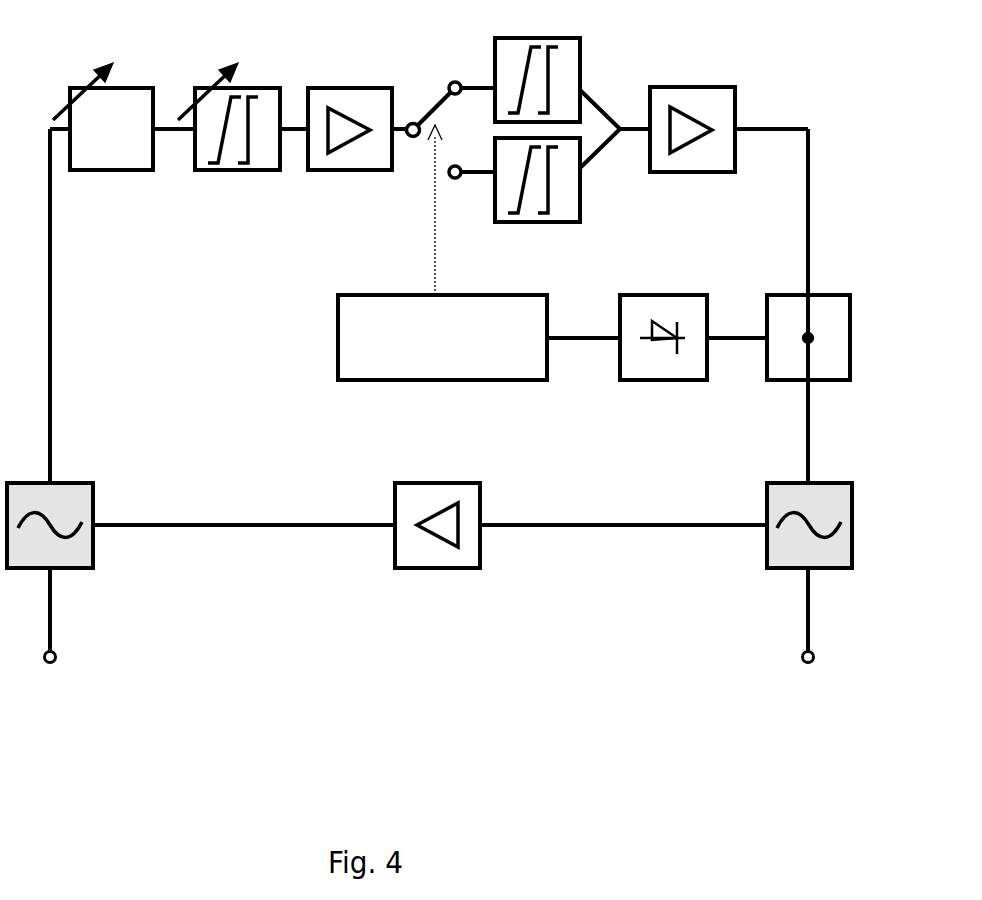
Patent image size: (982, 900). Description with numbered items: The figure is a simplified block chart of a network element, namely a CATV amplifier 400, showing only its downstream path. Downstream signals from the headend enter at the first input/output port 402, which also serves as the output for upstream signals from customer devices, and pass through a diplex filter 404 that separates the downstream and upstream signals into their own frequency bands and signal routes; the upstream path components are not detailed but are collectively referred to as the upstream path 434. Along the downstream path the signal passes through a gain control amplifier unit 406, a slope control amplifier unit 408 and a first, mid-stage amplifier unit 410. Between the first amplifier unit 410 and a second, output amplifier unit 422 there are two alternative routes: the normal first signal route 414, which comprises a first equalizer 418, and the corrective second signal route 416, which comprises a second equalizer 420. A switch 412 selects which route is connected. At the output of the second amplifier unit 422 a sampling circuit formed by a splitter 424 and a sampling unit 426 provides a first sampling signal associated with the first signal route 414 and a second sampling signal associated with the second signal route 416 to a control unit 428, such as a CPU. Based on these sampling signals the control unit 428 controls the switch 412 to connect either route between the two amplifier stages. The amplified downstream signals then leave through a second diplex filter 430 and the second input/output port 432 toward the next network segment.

The CATV amplifier 400 is at (851, 55).
The first input/output port 402 is at (68, 637).
The diplex filter 404 is at (83, 525).
The gain control amplifier unit 406 is at (103, 171).
The slope control amplifier unit 408 is at (229, 171).
The first amplifier unit 410 is at (350, 182).
The switch 412 is at (427, 120).
The first signal route 414 is at (470, 82).
The second signal route 416 is at (463, 178).
The first equalizer 418 is at (568, 100).
The second equalizer 420 is at (568, 205).
The second amplifier unit 422 is at (723, 115).
The splitter 424 is at (827, 368).
The sampling unit 426 is at (678, 378).
The control unit 428 is at (442, 353).
The diplex filter 430 is at (842, 525).
The second input/output port 432 is at (789, 633).
The upstream path 434 is at (447, 540).